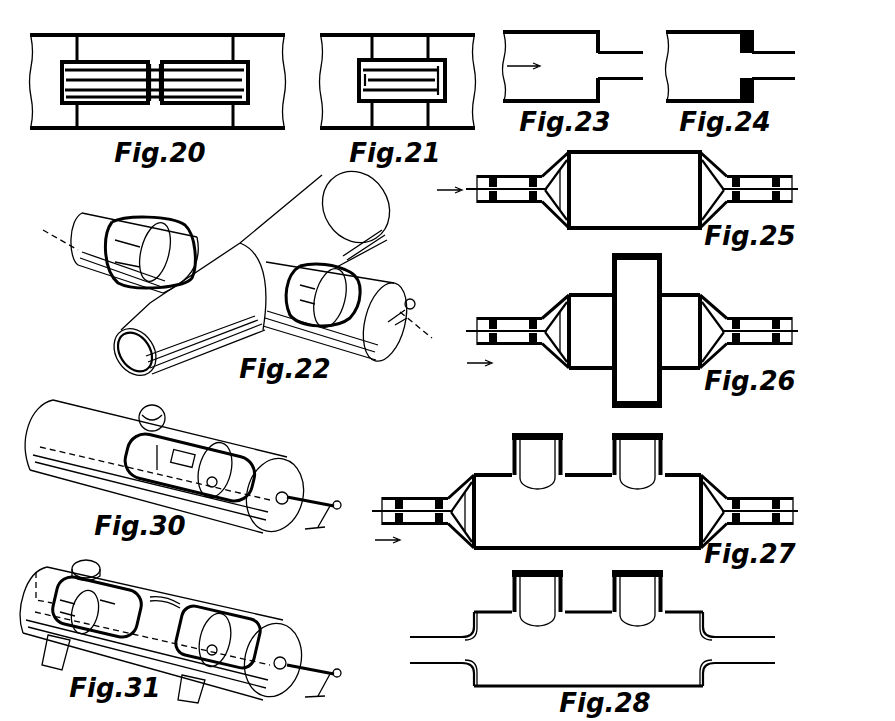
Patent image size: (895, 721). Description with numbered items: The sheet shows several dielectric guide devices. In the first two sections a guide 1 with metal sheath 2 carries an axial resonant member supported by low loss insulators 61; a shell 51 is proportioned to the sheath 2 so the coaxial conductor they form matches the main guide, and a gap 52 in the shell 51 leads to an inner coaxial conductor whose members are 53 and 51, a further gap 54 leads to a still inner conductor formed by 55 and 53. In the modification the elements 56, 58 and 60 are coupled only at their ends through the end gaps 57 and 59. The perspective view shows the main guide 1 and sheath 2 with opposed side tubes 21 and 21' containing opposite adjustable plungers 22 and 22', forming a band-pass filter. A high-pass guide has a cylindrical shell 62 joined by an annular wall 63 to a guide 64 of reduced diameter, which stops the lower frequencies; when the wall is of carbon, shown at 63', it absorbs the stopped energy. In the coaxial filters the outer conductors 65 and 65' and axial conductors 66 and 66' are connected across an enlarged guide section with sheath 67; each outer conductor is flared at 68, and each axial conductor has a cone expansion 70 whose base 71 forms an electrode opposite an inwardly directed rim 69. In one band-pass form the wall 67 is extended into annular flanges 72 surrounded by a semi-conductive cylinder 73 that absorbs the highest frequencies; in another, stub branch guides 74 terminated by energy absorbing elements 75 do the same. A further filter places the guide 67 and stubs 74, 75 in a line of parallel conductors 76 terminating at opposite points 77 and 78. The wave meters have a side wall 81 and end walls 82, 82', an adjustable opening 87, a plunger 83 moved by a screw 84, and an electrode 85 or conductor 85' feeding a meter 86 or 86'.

In FIG. 20, the guide 1 is at (45, 58).
In FIG. 22, the guide 1 is at (113, 349).
In FIG. 20, the metal sheath 2 is at (48, 33).
In FIG. 21, the metal sheath 2 is at (338, 33).
In FIG. 22, the metal sheath 2 is at (143, 309).
In FIG. 22, the side tube 21 is at (345, 314).
In FIG. 22, the side tube 21' is at (154, 271).
In FIG. 22, the plunger 22 is at (336, 292).
In FIG. 22, the plunger 22' is at (150, 244).
In FIG. 20, the shell 51 is at (185, 60).
In FIG. 20, the gap 52 is at (158, 60).
In FIG. 20, the inner coaxial conductor member 53 is at (213, 70).
In FIG. 20, the gap 54 is at (248, 78).
In FIG. 20, the inner coaxial conductor member 55 is at (167, 90).
In FIG. 21, the outer element 56 is at (414, 58).
In FIG. 21, the end gap 57 is at (447, 60).
In FIG. 21, the middle element 58 is at (410, 70).
In FIG. 21, the end gap 59 is at (362, 72).
In FIG. 21, the inner element 60 is at (372, 85).
In FIG. 20, the low loss insulators 61 is at (80, 48).
In FIG. 23, the cylindrical shell 62 is at (536, 33).
In FIG. 24, the cylindrical shell 62 is at (683, 33).
In FIG. 23, the annular wall 63 is at (614, 61).
In FIG. 24, the resistance material annular wall 63' is at (763, 61).
In FIG. 23, the guide of reduced diameter 64 is at (618, 53).
In FIG. 24, the guide of reduced diameter 64 is at (770, 53).
In FIG. 25, the outer coaxial conductor 65 is at (509, 198).
In FIG. 26, the outer coaxial conductor 65 is at (509, 341).
In FIG. 27, the outer coaxial conductor 65 is at (415, 522).
In FIG. 25, the outer coaxial conductor 65' is at (759, 198).
In FIG. 26, the outer coaxial conductor 65' is at (759, 341).
In FIG. 27, the outer coaxial conductor 65' is at (760, 522).
In FIG. 25, the axial conductor 66 is at (506, 171).
In FIG. 26, the axial conductor 66 is at (506, 314).
In FIG. 27, the axial conductor 66 is at (412, 495).
In FIG. 25, the axial conductor 66' is at (760, 170).
In FIG. 26, the axial conductor 66' is at (760, 313).
In FIG. 27, the axial conductor 66' is at (760, 492).
In FIG. 25, the metal sheath 67 is at (643, 230).
In FIG. 26, the metal sheath 67 is at (665, 370).
In FIG. 27, the metal sheath 67 is at (572, 549).
In FIG. 28, the metal sheath 67 is at (675, 688).
In FIG. 25, the flare 68 is at (560, 220).
In FIG. 26, the flare 68 is at (560, 363).
In FIG. 27, the flare 68 is at (463, 541).
In FIG. 25, the inwardly directed rim 69 is at (578, 222).
In FIG. 26, the inwardly directed rim 69 is at (578, 364).
In FIG. 27, the inwardly directed rim 69 is at (481, 543).
In FIG. 25, the cone expansion 70 is at (551, 208).
In FIG. 26, the cone expansion 70 is at (551, 351).
In FIG. 27, the cone expansion 70 is at (455, 531).
In FIG. 25, the base 71 is at (573, 195).
In FIG. 26, the base 71 is at (573, 337).
In FIG. 27, the base 71 is at (478, 518).
In FIG. 26, the annular flanges 72 is at (612, 281).
In FIG. 26, the cylinder 73 is at (630, 253).
In FIG. 27, the stub branch guides 74 is at (512, 455).
In FIG. 28, the stub branch guides 74 is at (514, 596).
In FIG. 27, the energy absorbing element 75 is at (520, 433).
In FIG. 28, the energy absorbing element 75 is at (512, 572).
In FIG. 28, the parallel conductors 76 is at (443, 662).
In FIG. 28, the conductor terminal 77 is at (474, 612).
In FIG. 28, the conductor terminal 78 is at (474, 686).
In FIG. 30, the cylindrical side wall 81 is at (102, 405).
In FIG. 31, the cylindrical side wall 81 is at (105, 655).
In FIG. 30, the end wall 82 is at (37, 427).
In FIG. 31, the end wall 82 is at (170, 625).
In FIG. 30, the end wall 82' is at (284, 491).
In FIG. 30, the plunger 83 is at (232, 458).
In FIG. 31, the plunger 83 is at (230, 620).
In FIG. 30, the screw 84 is at (312, 500).
In FIG. 31, the screw 84 is at (310, 665).
In FIG. 30, the electrode 85 is at (189, 467).
In FIG. 31, the conductor 85' is at (101, 602).
In FIG. 30, the meter 86 is at (166, 418).
In FIG. 31, the meter 86 is at (77, 562).
In FIG. 31, the meter 86' is at (110, 669).
In FIG. 30, the adjustable opening 87 is at (190, 448).
In FIG. 31, the adjustable opening 87 is at (152, 595).